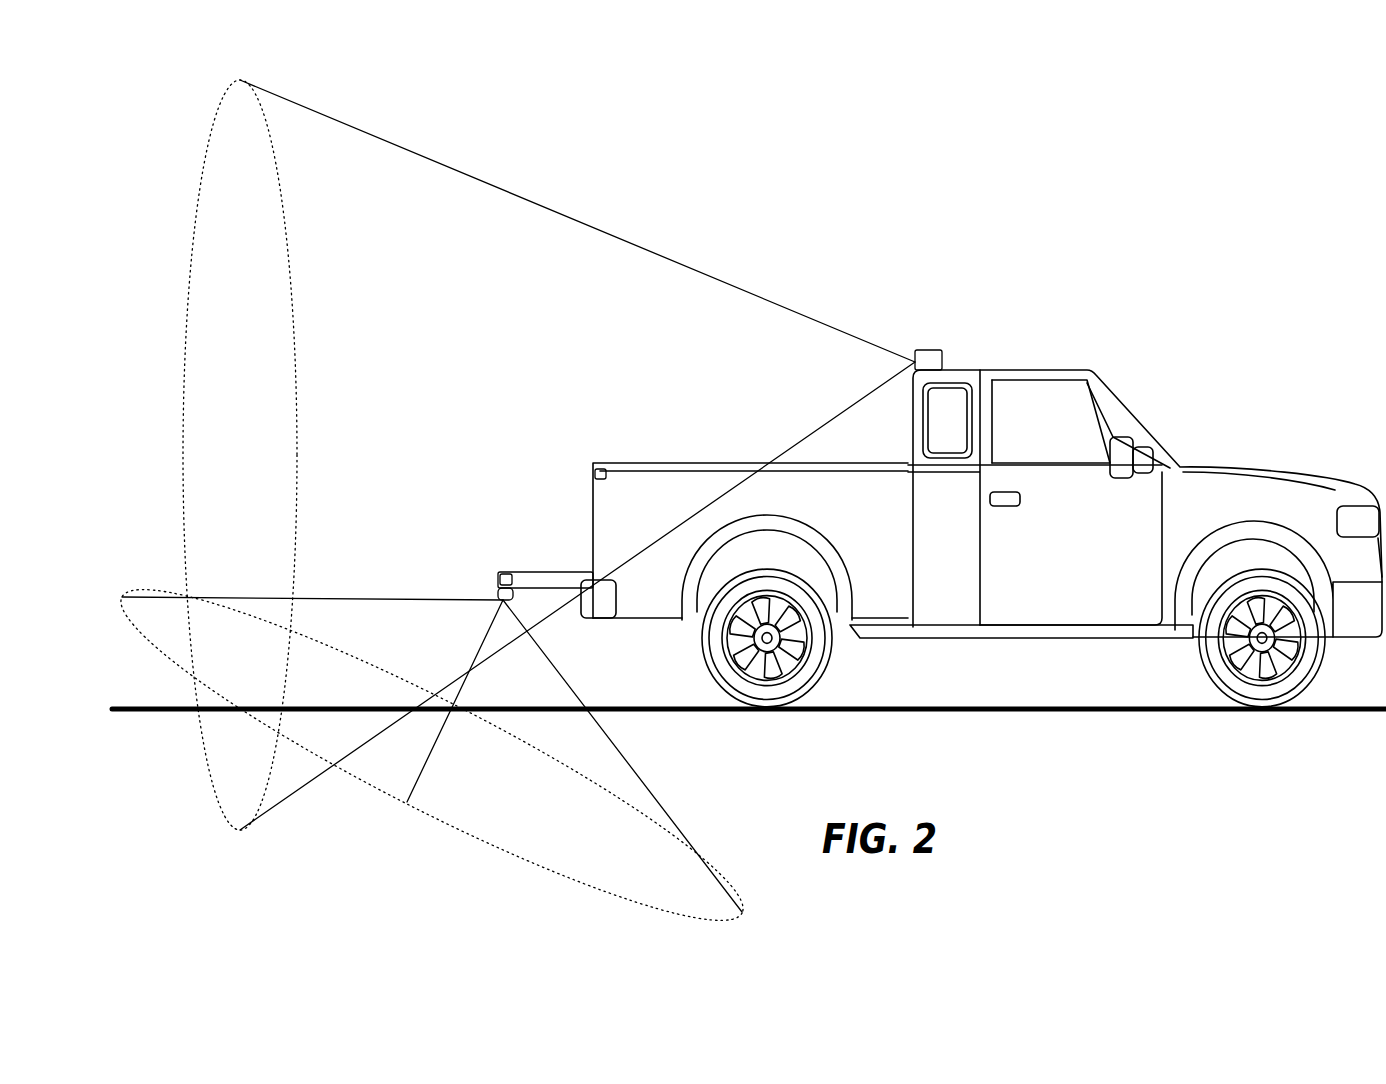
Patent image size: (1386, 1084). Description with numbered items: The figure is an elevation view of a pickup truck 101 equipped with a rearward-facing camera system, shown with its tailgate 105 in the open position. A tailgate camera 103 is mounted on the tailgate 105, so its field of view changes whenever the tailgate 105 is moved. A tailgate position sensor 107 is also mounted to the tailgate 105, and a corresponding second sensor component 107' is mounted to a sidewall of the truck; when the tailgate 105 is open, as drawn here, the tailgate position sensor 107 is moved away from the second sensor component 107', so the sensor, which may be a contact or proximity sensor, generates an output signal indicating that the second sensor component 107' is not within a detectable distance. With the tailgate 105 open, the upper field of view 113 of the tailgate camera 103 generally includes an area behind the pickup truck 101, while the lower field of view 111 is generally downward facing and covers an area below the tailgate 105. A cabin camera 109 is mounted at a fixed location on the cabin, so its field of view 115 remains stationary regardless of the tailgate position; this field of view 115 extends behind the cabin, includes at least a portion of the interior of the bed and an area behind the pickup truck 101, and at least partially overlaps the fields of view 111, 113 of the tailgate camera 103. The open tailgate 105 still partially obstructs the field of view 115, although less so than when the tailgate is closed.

The pickup truck 101 is at (933, 534).
The tailgate camera 103 is at (515, 590).
The tailgate 105 is at (548, 572).
The tailgate position sensor 107 is at (480, 542).
The second sensor component 107' is at (622, 440).
The cabin camera 109 is at (933, 362).
The lower field of view 111 is at (516, 824).
The upper field of view 113 is at (318, 695).
The field of view of the cabin camera 115 is at (226, 218).